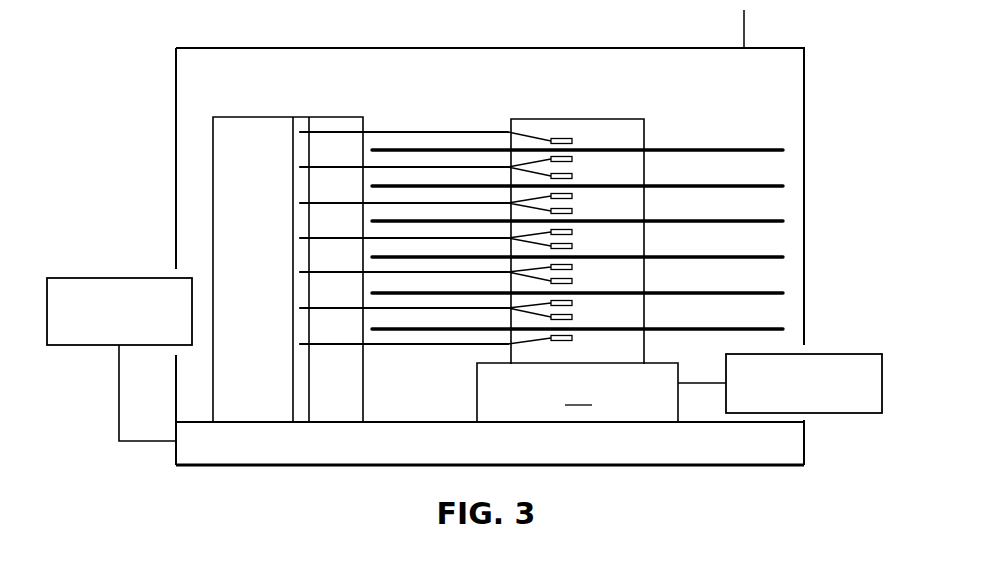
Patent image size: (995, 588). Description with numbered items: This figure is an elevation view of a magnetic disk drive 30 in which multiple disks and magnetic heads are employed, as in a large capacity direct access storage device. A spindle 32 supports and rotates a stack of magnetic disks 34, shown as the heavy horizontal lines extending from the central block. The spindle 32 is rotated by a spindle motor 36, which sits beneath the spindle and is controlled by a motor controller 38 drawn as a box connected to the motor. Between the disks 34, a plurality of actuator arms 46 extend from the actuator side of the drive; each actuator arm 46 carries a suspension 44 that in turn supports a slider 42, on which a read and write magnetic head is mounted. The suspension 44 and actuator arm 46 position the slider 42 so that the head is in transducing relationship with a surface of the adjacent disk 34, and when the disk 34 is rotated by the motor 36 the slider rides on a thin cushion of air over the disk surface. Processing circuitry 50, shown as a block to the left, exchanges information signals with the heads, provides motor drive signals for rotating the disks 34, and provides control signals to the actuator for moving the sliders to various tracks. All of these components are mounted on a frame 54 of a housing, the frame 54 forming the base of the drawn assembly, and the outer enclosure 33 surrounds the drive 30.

The magnetic disk drive 30 is at (692, 123).
The spindle 32 is at (632, 119).
The enclosure 33 is at (744, 24).
The magnetic disk 34 is at (783, 151).
The spindle motor 36 is at (601, 393).
The motor controller 38 is at (840, 414).
The slider 42 is at (573, 159).
The suspension 44 is at (547, 163).
The actuator arm 46 is at (480, 166).
The processing circuitry 50 is at (90, 277).
The frame 54 is at (229, 458).